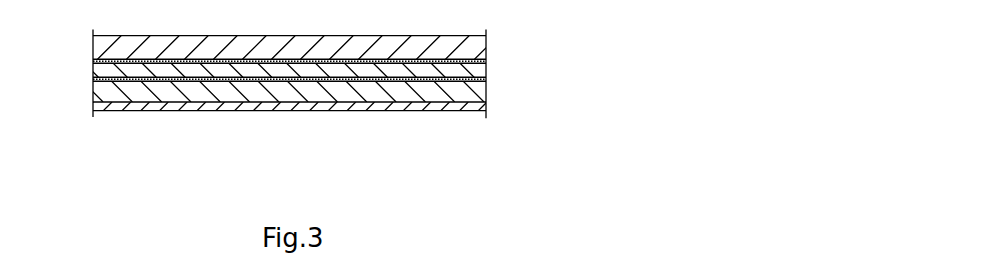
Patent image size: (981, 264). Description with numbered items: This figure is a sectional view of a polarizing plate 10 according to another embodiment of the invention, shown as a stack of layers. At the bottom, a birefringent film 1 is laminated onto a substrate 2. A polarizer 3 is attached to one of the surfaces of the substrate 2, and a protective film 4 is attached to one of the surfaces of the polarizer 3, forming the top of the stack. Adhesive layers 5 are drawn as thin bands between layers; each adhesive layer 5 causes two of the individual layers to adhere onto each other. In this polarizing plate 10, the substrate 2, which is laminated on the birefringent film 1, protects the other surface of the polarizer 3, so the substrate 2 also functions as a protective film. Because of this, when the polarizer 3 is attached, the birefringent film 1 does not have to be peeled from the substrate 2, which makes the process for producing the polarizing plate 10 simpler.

The birefringent film 1 is at (472, 107).
The substrate 2 is at (467, 87).
The polarizer 3 is at (472, 69).
The protective film 4 is at (472, 45).
The adhesive layer 5 is at (93, 62).
The polarizing plate 10 is at (534, 151).